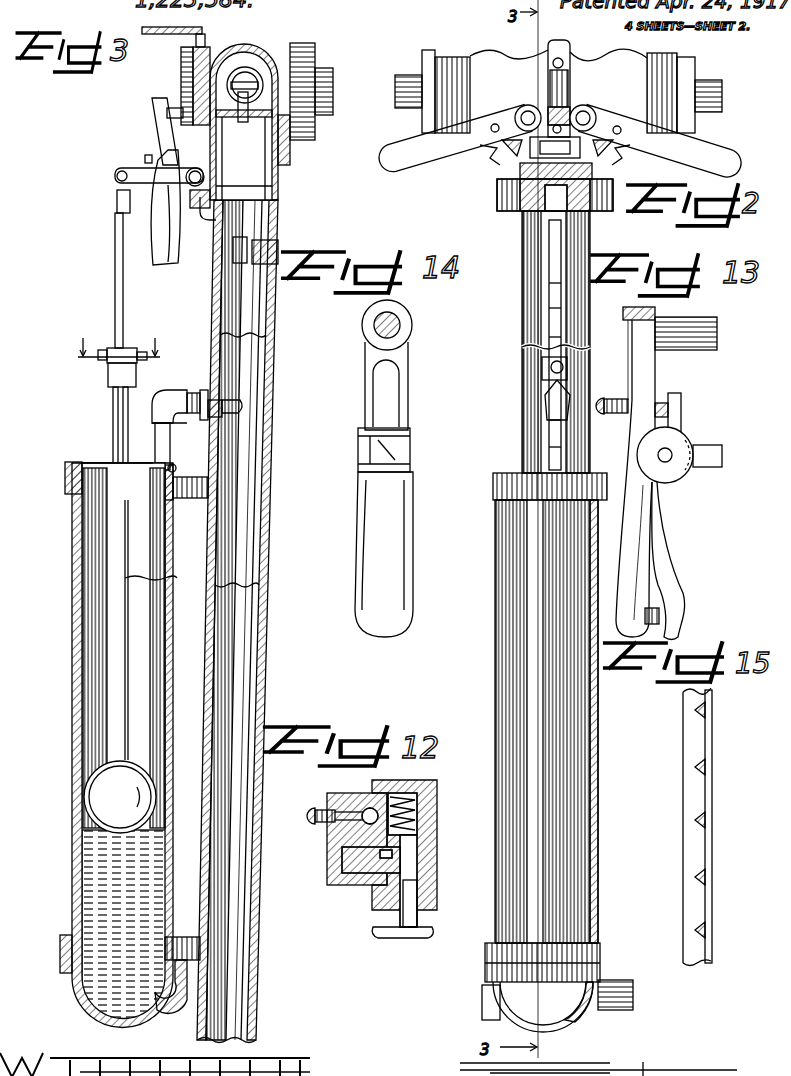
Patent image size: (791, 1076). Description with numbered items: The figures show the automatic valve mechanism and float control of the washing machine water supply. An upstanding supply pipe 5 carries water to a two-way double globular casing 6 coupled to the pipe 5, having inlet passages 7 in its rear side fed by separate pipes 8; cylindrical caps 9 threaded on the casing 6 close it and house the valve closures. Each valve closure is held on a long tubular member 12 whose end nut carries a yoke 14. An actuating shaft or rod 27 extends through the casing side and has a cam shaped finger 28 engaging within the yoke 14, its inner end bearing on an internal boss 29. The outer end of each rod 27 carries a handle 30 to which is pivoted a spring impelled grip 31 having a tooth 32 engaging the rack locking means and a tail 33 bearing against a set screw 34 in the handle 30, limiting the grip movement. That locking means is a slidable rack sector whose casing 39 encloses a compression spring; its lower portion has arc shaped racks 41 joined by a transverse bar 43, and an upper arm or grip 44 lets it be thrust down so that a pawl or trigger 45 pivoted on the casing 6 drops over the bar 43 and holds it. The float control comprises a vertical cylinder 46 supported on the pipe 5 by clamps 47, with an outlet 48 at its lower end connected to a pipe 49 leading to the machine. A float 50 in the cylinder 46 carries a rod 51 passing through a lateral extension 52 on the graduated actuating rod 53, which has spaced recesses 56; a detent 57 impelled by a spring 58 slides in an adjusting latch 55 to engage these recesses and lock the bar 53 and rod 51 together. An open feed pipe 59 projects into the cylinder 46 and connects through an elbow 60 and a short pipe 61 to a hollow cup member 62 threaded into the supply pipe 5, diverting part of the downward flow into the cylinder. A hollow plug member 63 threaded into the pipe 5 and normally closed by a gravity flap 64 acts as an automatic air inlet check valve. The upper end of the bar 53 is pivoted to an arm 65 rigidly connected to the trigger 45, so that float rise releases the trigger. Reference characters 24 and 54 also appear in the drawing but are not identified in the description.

In FIG. 3, the vertical supply pipe 5 is at (245, 658).
In FIG. 2, the vertical supply pipe 5 is at (540, 318).
In FIG. 3, the double globular casing 6 is at (245, 58).
In FIG. 2, the double globular casing 6 is at (600, 58).
In FIG. 3, the inlet passages 7 is at (300, 88).
In FIG. 3, the pipes 8 is at (330, 108).
In FIG. 2, the cylindrical caps 9 is at (405, 100).
In FIG. 3, the tubular member 12 is at (118, 341).
In FIG. 3, the yoke 14 is at (258, 78).
In FIG. 2, the gear flange 24 is at (690, 57).
In FIG. 2, the actuating shaft 27 is at (528, 105).
In FIG. 14, the actuating shaft 27 is at (400, 328).
In FIG. 13, the actuating shaft 27 is at (690, 350).
In FIG. 3, the cam shaped finger 28 is at (250, 182).
In FIG. 3, the boss 29 is at (243, 125).
In FIG. 3, the handle 30 is at (150, 233).
In FIG. 2, the handle 30 is at (415, 157).
In FIG. 14, the handle 30 is at (410, 570).
In FIG. 13, the handle 30 is at (635, 438).
In FIG. 14, the spring impelled grip 31 is at (385, 512).
In FIG. 13, the spring impelled grip 31 is at (670, 547).
In FIG. 14, the tooth 32 is at (360, 480).
In FIG. 13, the tooth 32 is at (722, 460).
In FIG. 3, the tail 33 is at (160, 130).
In FIG. 14, the tail 33 is at (390, 410).
In FIG. 13, the tail 33 is at (681, 415).
In FIG. 13, the set screw 34 is at (610, 398).
In FIG. 2, the casing 39 is at (565, 63).
In FIG. 2, the arc shaped racks 41 is at (500, 160).
In FIG. 2, the transverse bar 43 is at (528, 205).
In FIG. 3, the arm or grip 44 is at (165, 36).
In FIG. 2, the arm or grip 44 is at (568, 48).
In FIG. 3, the pawl or trigger 45 is at (198, 211).
In FIG. 2, the pawl or trigger 45 is at (582, 150).
In FIG. 3, the float cylinder 46 is at (72, 640).
In FIG. 2, the float cylinder 46 is at (515, 562).
In FIG. 3, the clamps 47 is at (190, 499).
In FIG. 2, the clamps 47 is at (520, 495).
In FIG. 3, the outlet 48 is at (172, 1005).
In FIG. 2, the outlet 48 is at (590, 1015).
In FIG. 2, the pipe 49 is at (615, 985).
In FIG. 3, the float 50 is at (95, 797).
In FIG. 3, the rod 51 is at (162, 630).
In FIG. 12, the rod 51 is at (365, 790).
In FIG. 3, the lateral extension 52 is at (118, 492).
In FIG. 3, the graduated actuating rod 53 is at (113, 410).
In FIG. 2, the graduated actuating rod 53 is at (552, 245).
In FIG. 15, the graduated actuating rod 53 is at (690, 795).
In FIG. 12, the graduated actuating rod 53 is at (370, 895).
In FIG. 12, the screw 54 is at (312, 818).
In FIG. 3, the adjusting latch 55 is at (115, 368).
In FIG. 2, the adjusting latch 55 is at (542, 368).
In FIG. 12, the adjusting latch 55 is at (335, 860).
In FIG. 15, the recesses 56 is at (698, 826).
In FIG. 3, the detent 57 is at (105, 358).
In FIG. 2, the detent 57 is at (563, 363).
In FIG. 12, the detent 57 is at (390, 930).
In FIG. 12, the spring 58 is at (417, 812).
In FIG. 3, the feed pipe 59 is at (168, 455).
In FIG. 3, the elbow 60 is at (153, 400).
In FIG. 3, the short pipe 61 is at (192, 392).
In FIG. 3, the cup member 62 is at (235, 400).
In FIG. 3, the hollow plug member 63 is at (265, 248).
In FIG. 3, the check or flap 64 is at (243, 237).
In FIG. 3, the arm 65 is at (138, 170).